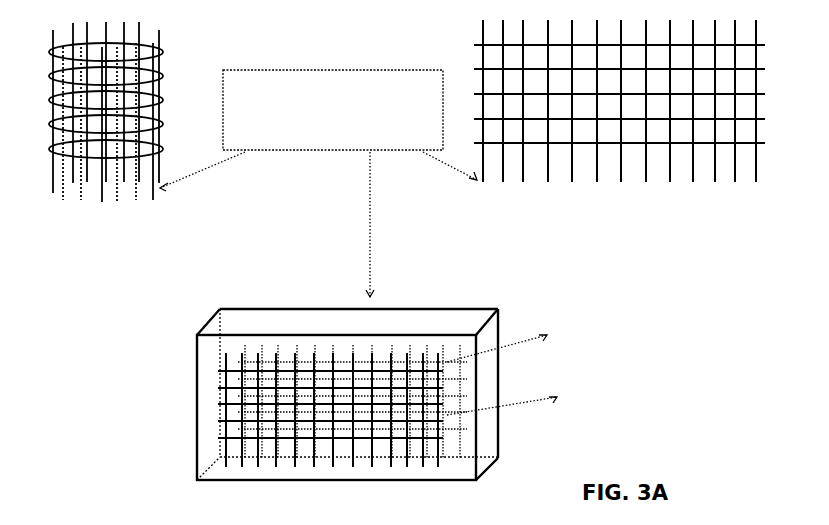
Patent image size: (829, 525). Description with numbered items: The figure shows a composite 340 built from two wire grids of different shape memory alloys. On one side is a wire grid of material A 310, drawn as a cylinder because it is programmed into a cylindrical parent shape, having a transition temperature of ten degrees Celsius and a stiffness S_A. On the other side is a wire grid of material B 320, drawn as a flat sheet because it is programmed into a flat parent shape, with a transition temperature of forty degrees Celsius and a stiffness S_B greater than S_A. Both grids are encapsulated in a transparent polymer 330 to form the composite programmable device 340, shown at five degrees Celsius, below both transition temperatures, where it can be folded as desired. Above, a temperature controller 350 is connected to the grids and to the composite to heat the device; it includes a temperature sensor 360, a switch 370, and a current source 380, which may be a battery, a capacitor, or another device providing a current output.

The wire grid of material A 310 is at (163, 153).
The wire grid of material B 320 is at (619, 148).
The transparent polymer 330 is at (498, 387).
The composite 340 is at (489, 416).
The temperature controller 350 is at (318, 168).
The temperature sensor 360 is at (331, 87).
The switch 370 is at (332, 109).
The current source 380 is at (333, 134).